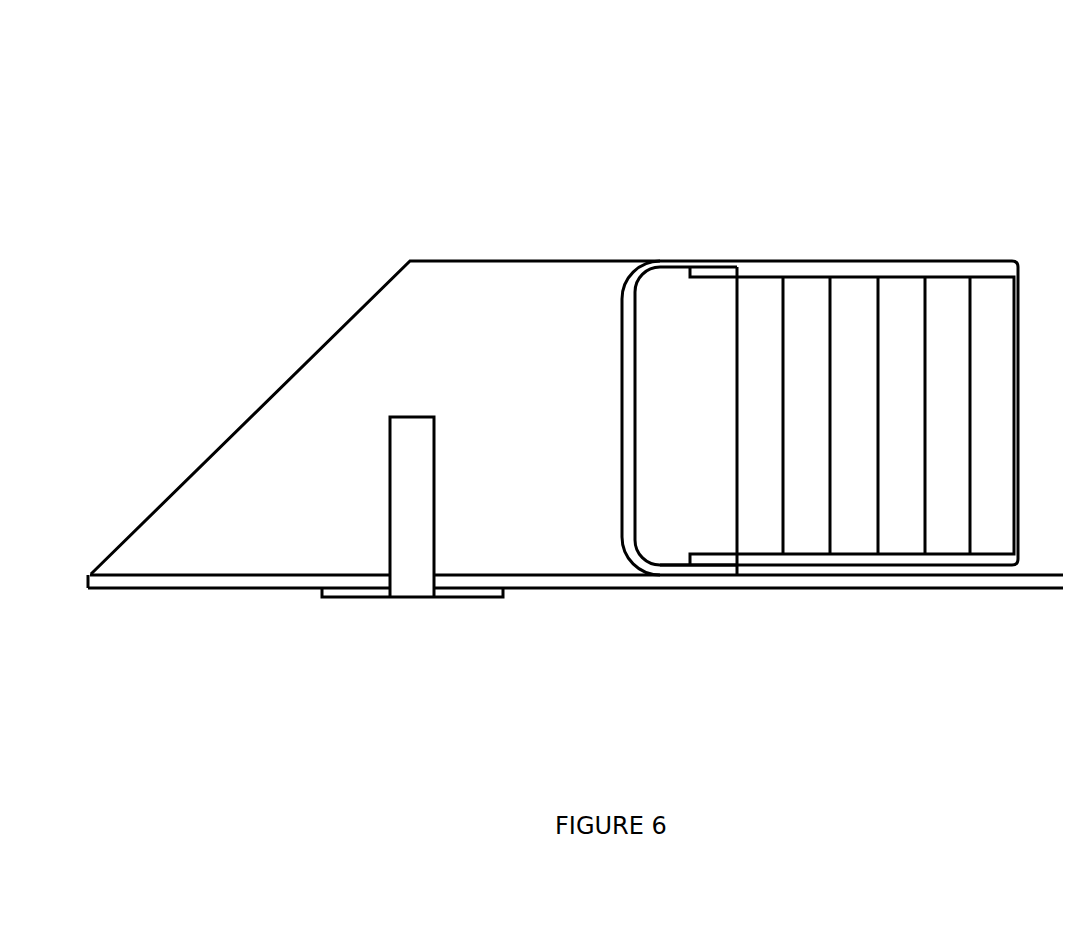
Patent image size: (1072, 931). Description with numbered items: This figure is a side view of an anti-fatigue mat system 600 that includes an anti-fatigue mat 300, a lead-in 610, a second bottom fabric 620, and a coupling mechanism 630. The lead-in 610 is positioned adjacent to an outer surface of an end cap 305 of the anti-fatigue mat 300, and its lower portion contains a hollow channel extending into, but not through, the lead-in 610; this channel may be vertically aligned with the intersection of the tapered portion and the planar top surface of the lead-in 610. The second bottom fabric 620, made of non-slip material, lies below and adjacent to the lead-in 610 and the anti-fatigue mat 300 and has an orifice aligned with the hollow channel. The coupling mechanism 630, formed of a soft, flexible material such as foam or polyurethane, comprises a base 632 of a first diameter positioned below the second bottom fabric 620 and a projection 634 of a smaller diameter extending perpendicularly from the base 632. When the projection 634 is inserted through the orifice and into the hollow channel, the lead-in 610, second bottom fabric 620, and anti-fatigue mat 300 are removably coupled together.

The anti-fatigue mat system 600 is at (230, 120).
The lead-in 610 is at (480, 308).
The second bottom fabric 620 is at (243, 588).
The coupling mechanism 630 is at (405, 575).
The base 632 is at (361, 600).
The projection 634 is at (405, 488).
The end cap 305 is at (626, 430).
The anti-fatigue mat 300 is at (850, 325).